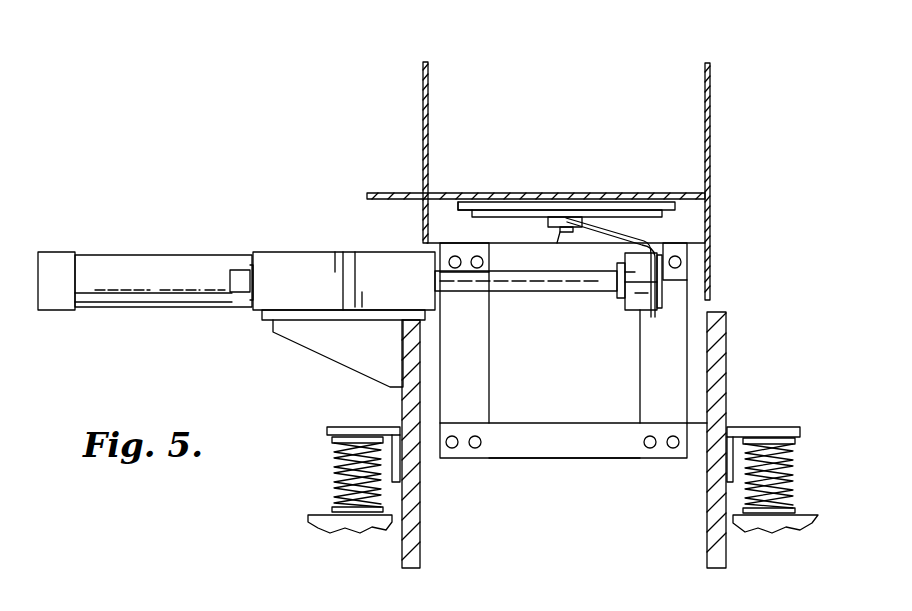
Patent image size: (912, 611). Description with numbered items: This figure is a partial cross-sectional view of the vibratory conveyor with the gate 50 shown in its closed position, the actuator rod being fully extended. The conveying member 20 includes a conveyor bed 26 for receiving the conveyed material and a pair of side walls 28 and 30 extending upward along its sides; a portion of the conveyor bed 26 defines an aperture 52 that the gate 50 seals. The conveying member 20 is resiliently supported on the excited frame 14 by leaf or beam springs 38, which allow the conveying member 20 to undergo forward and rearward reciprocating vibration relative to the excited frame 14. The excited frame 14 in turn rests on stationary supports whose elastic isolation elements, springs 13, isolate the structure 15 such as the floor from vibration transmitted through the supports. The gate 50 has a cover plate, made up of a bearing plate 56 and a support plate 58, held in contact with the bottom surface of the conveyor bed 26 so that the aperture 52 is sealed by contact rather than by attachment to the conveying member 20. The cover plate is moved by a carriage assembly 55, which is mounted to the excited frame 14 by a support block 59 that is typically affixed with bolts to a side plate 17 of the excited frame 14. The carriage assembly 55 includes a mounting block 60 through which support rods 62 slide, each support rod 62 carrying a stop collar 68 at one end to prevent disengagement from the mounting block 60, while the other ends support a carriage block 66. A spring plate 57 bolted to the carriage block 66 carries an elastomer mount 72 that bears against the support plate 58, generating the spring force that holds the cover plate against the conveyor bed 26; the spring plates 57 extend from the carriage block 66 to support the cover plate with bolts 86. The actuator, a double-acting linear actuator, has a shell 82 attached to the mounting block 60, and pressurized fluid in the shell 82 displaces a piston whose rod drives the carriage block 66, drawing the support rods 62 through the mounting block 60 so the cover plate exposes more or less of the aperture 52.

The springs 13 is at (330, 478).
The excited frame 14 is at (750, 340).
The structure 15 is at (312, 517).
The side plate 17 is at (422, 535).
The conveying member 20 is at (727, 83).
The conveyor bed 26 is at (446, 193).
The side wall 28 is at (422, 108).
The side wall 30 is at (712, 137).
The leaf or beam springs 38 is at (638, 400).
The gate 50 is at (212, 122).
The aperture 52 is at (608, 205).
The carriage assembly 55 is at (197, 318).
The bearing plate 56 is at (537, 202).
The spring plate 57 is at (618, 223).
The support plate 58 is at (472, 213).
The support block 59 is at (322, 357).
The mounting block 60 is at (293, 251).
The support rods 62 is at (547, 292).
The carriage block 66 is at (623, 311).
The stop collar 68 is at (243, 307).
The elastomer mount 72 is at (548, 218).
The shell 82 is at (156, 252).
The bolts 86 is at (555, 232).